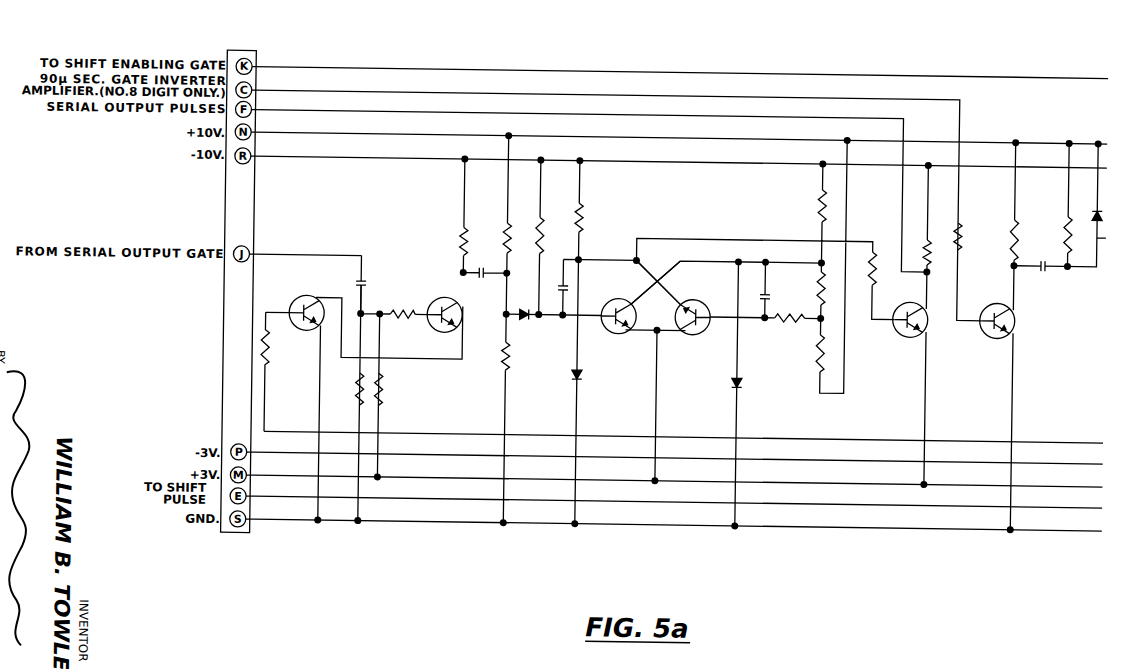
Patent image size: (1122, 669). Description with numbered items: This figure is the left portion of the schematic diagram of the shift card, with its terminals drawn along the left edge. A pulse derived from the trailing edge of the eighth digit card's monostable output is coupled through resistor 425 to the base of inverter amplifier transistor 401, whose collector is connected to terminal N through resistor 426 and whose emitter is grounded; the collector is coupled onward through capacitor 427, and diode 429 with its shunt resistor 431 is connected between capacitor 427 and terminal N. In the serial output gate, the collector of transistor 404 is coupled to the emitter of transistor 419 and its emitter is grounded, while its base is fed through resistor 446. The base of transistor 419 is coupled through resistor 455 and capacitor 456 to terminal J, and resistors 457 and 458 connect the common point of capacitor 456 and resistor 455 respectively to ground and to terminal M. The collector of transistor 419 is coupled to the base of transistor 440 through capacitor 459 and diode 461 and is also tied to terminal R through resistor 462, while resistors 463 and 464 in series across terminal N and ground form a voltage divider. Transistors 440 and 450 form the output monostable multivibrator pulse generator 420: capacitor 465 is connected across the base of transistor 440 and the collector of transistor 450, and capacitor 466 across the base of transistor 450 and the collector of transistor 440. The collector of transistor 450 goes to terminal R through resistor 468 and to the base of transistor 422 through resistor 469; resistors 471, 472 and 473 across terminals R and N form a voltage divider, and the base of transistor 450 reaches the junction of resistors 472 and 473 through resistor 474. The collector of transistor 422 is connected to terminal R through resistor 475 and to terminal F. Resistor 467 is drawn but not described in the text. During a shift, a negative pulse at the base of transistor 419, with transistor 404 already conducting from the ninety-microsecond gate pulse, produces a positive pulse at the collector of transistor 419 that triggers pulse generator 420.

The inverter amplifier transistor 401 is at (1021, 307).
The transistor 404 is at (303, 323).
The transistor 419 is at (447, 291).
The output monostable multivibrator pulse generator 420 is at (679, 306).
The transistor 422 is at (895, 325).
The resistor 425 is at (963, 220).
The resistor 426 is at (1020, 215).
The capacitor 427 is at (1049, 256).
The diode 429 is at (1096, 198).
The shunt resistor 431 is at (1069, 222).
The transistor 440 is at (622, 326).
The resistor 446 is at (272, 357).
The transistor 450 is at (696, 326).
The resistor 455 is at (409, 313).
The capacitor 456 is at (367, 272).
The resistor 457 is at (369, 376).
The resistor 458 is at (386, 389).
The capacitor 459 is at (486, 260).
The diode 461 is at (530, 311).
The resistor 462 is at (466, 226).
The resistor 463 is at (509, 223).
The resistor 464 is at (514, 350).
The capacitor 465 is at (573, 280).
The capacitor 466 is at (775, 287).
The resistor 467 is at (544, 215).
The resistor 468 is at (583, 205).
The resistor 469 is at (878, 262).
The resistor 471 is at (823, 183).
The resistor 472 is at (822, 272).
The resistor 473 is at (822, 345).
The resistor 474 is at (786, 310).
The resistor 475 is at (933, 241).